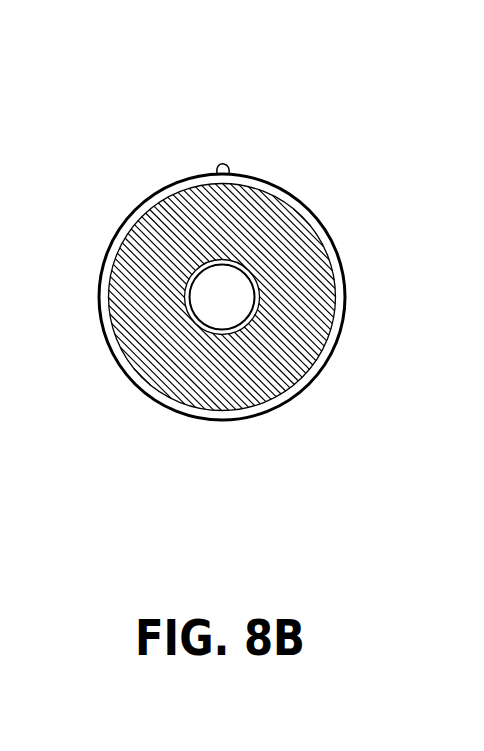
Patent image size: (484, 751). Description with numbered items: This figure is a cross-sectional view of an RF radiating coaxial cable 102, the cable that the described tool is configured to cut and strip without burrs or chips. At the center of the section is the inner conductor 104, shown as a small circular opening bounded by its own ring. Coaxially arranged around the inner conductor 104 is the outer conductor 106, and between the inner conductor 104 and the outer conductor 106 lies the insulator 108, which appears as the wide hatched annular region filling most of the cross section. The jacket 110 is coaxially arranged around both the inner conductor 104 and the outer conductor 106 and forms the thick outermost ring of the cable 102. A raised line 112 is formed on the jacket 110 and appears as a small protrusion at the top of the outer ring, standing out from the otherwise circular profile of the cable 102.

The RF radiating coaxial cable 102 is at (239, 29).
The inner conductor 104 is at (183, 294).
The outer conductor 106 is at (115, 348).
The insulator 108 is at (302, 333).
The jacket 110 is at (324, 218).
The raised line 112 is at (226, 165).